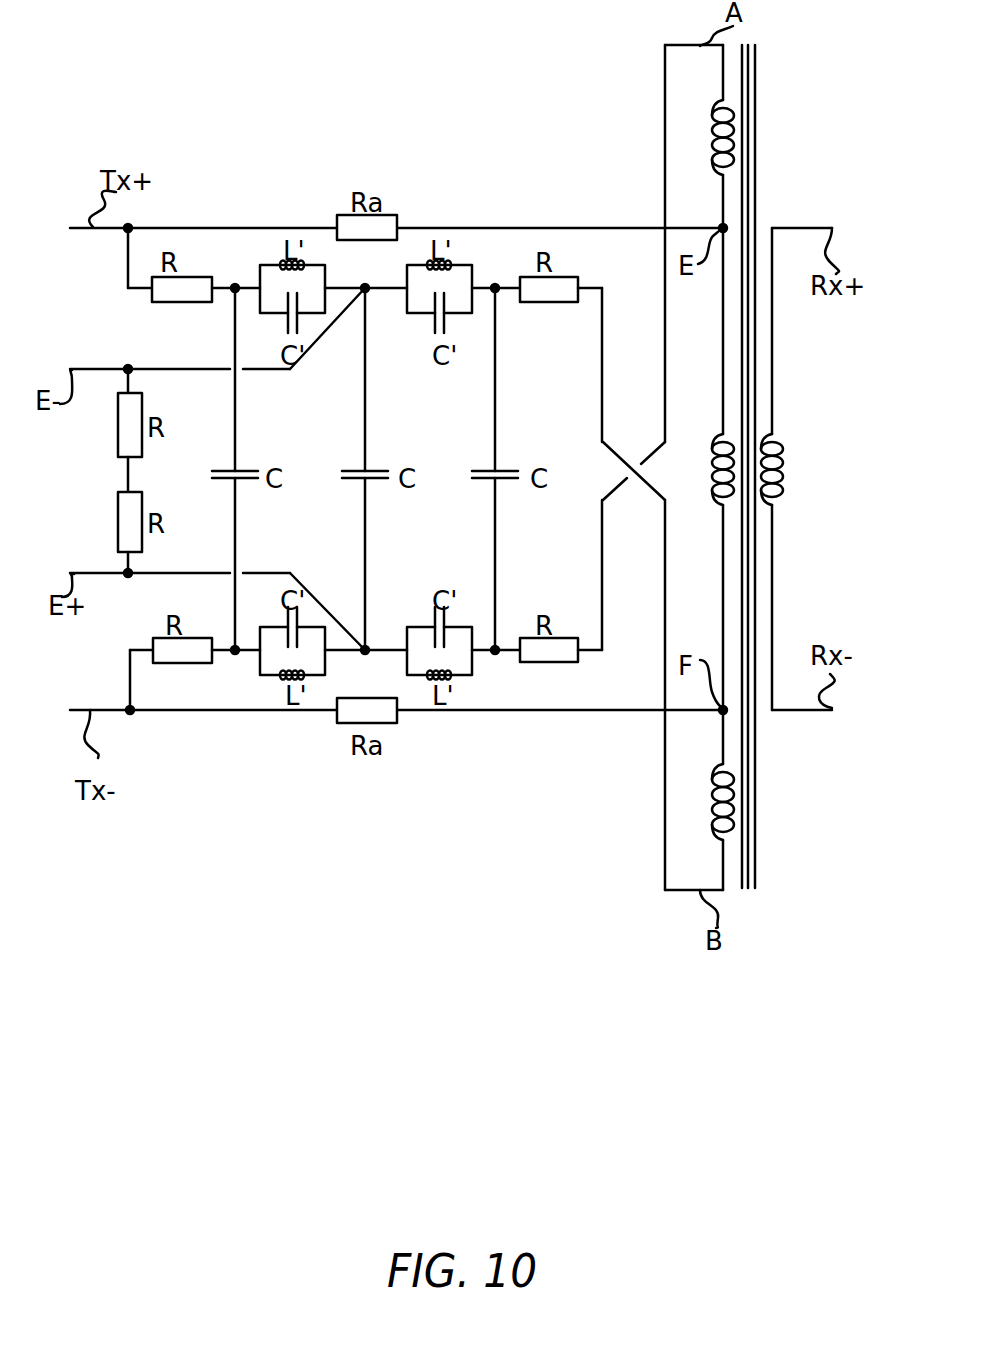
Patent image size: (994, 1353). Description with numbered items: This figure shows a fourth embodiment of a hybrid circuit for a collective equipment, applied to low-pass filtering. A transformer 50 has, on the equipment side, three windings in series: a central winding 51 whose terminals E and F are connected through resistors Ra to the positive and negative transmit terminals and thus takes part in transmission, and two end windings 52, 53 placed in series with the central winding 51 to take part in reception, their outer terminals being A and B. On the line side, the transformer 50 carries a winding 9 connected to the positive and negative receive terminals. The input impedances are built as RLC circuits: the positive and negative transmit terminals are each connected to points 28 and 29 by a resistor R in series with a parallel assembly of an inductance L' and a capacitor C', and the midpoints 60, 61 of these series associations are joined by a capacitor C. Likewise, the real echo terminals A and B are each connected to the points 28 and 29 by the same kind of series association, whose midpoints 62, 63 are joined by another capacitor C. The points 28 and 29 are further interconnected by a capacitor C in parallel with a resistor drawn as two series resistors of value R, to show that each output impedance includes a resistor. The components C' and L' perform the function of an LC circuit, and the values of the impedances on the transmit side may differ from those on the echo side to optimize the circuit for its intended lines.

The midpoint 60 is at (235, 286).
The midpoint 61 is at (235, 653).
The midpoint 62 is at (495, 286).
The midpoint 63 is at (495, 653).
The point 28 is at (366, 286).
The point 29 is at (366, 652).
The central winding 51 is at (712, 456).
The end winding 52 is at (712, 122).
The end winding 53 is at (712, 790).
The winding 9 is at (783, 457).
The transformer 50 is at (750, 905).